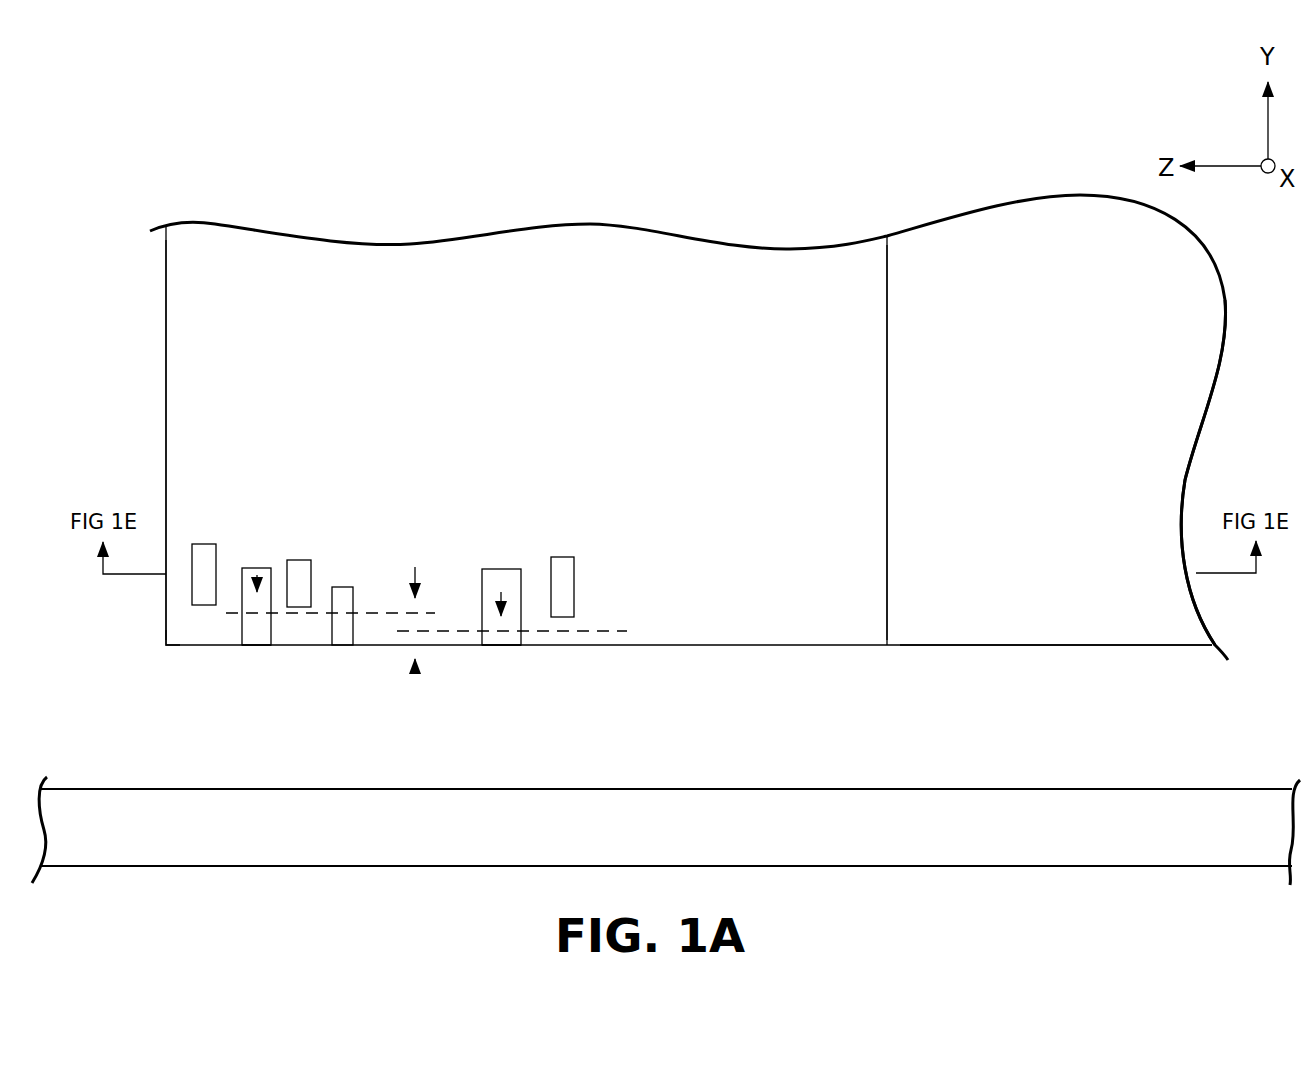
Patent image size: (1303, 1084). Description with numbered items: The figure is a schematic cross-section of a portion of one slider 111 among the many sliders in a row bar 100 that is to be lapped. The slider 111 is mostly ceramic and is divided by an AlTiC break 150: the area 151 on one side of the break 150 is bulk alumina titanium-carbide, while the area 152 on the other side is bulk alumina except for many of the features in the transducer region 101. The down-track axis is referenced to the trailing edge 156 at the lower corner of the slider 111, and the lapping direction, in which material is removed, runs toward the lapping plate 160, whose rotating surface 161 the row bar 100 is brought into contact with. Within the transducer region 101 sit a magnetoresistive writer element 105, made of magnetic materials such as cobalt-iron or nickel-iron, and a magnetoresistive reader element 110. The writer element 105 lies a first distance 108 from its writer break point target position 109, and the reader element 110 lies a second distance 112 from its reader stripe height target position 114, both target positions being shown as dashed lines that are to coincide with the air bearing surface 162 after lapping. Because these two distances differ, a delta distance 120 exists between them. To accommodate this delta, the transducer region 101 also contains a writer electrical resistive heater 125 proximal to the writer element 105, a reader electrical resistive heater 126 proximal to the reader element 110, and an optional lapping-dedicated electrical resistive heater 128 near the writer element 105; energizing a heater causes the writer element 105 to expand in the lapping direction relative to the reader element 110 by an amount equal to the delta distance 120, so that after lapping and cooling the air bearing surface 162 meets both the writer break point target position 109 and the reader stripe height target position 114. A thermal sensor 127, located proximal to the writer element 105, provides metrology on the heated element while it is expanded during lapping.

The row bar 100 is at (146, 166).
The transducer region 101 is at (583, 445).
The magnetoresistive writer element 105 is at (257, 568).
The first distance 108 is at (258, 661).
The writer break point target position 109 is at (393, 612).
The magnetoresistive reader element 110 is at (502, 569).
The slider 111 is at (1163, 399).
The second distance 112 is at (501, 661).
The reader stripe height target position 114 is at (607, 631).
The delta distance 120 is at (417, 603).
The writer electrical resistive heater 125 is at (299, 560).
The reader electrical resistive heater 126 is at (563, 557).
The thermal sensor 127 is at (344, 587).
The optional electrical resistive heater 128 is at (205, 544).
The AlTiC break 150 is at (887, 476).
The area to the right of break 151 is at (1044, 439).
The area to the left of break 152 is at (770, 439).
The trailing edge 156 is at (148, 641).
The lapping plate 160 is at (671, 831).
The rotating surface 161 is at (950, 789).
The air bearing surface 162 is at (1030, 646).